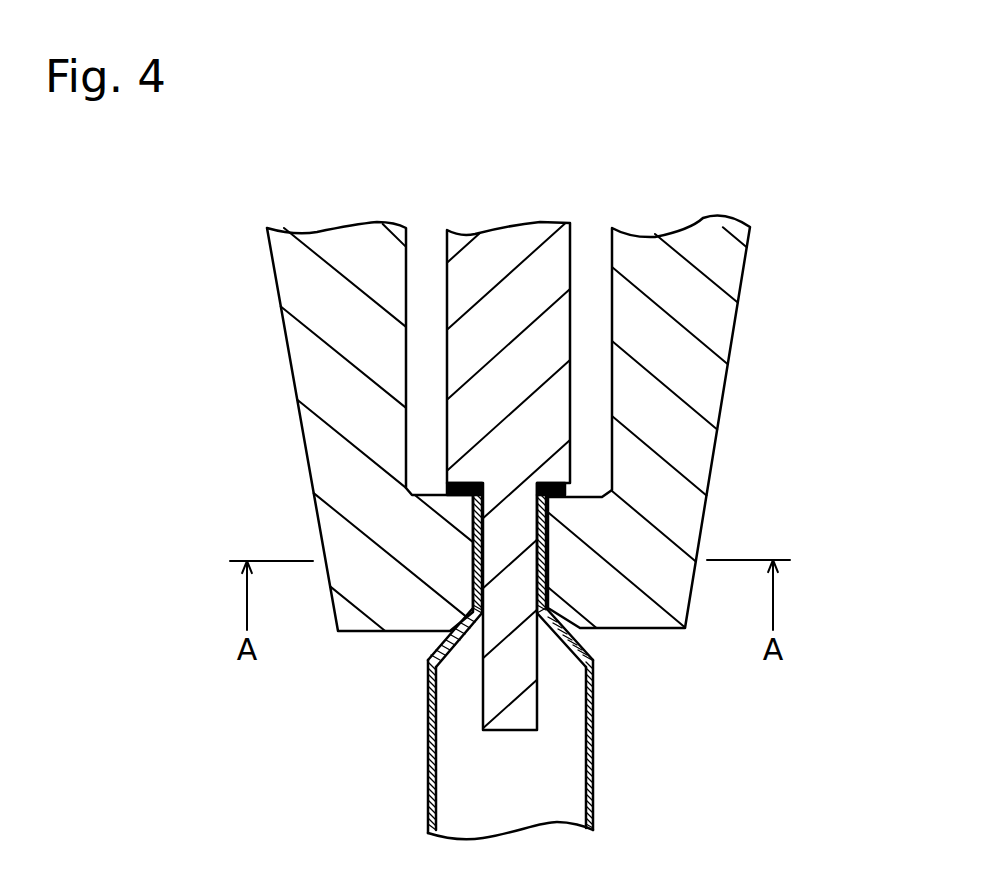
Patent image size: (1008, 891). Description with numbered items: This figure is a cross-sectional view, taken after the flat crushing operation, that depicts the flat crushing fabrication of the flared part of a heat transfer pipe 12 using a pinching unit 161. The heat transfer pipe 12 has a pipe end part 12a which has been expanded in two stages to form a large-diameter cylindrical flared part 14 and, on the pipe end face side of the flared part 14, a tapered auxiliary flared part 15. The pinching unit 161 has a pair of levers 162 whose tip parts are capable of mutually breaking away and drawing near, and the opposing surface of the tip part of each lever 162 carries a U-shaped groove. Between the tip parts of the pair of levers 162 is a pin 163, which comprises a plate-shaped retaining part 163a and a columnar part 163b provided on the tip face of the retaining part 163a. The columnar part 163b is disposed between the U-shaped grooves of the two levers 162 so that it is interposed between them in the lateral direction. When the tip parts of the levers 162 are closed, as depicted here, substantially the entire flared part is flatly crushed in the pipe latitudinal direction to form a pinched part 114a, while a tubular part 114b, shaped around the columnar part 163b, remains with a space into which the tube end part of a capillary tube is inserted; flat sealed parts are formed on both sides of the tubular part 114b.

The pinching unit 161 is at (780, 228).
The lever 162 is at (288, 344).
The pin 163 is at (437, 245).
The retaining part 163a is at (557, 278).
The columnar part 163b is at (503, 722).
The flared part 14 is at (470, 567).
The auxiliary flared part 15 is at (467, 497).
The pinched part 114a is at (548, 555).
The tubular part 114b is at (548, 525).
The heat transfer pipe 12 is at (628, 793).
The pipe end part 12a is at (601, 724).